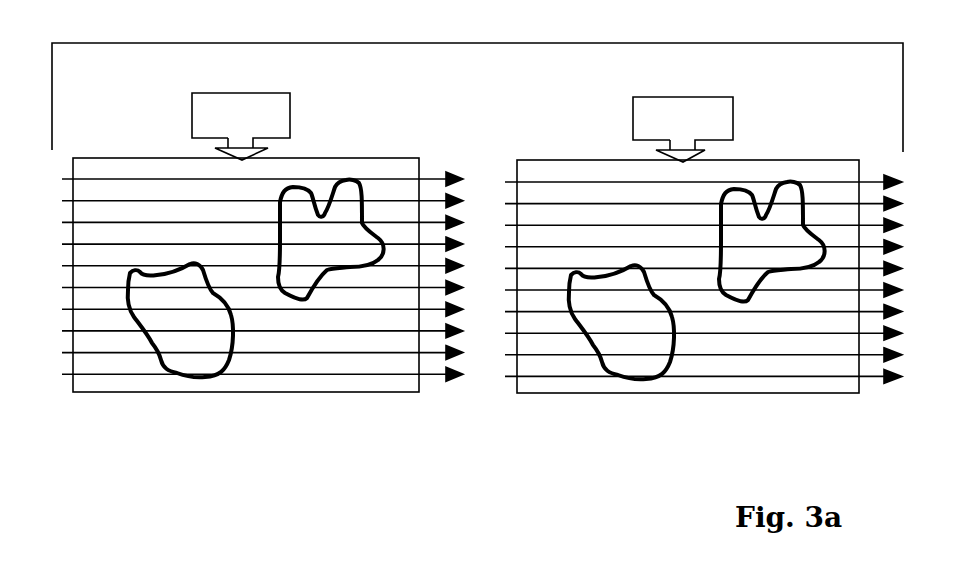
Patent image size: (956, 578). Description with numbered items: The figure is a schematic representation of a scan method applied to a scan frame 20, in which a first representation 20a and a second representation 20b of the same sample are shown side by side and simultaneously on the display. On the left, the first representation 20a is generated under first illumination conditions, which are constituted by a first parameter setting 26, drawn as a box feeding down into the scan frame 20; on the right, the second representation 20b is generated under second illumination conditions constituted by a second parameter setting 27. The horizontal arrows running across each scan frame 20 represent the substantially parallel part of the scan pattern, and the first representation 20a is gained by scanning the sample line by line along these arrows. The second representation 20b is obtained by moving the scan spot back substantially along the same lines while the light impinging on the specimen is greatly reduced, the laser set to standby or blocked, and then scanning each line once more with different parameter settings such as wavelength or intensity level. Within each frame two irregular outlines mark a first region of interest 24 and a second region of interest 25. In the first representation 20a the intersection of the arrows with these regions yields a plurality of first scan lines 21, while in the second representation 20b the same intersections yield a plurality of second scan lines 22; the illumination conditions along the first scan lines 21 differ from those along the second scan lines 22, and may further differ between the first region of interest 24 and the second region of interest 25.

The scan frame 20 is at (358, 392).
The first representation 20a is at (310, 383).
The second representation 20b is at (750, 385).
The first scan lines 21 is at (277, 203).
The second scan lines 22 is at (585, 288).
The first region of interest 24 is at (343, 178).
The second region of interest 25 is at (158, 370).
The first parameter setting 26 is at (323, 95).
The second parameter setting 27 is at (722, 118).